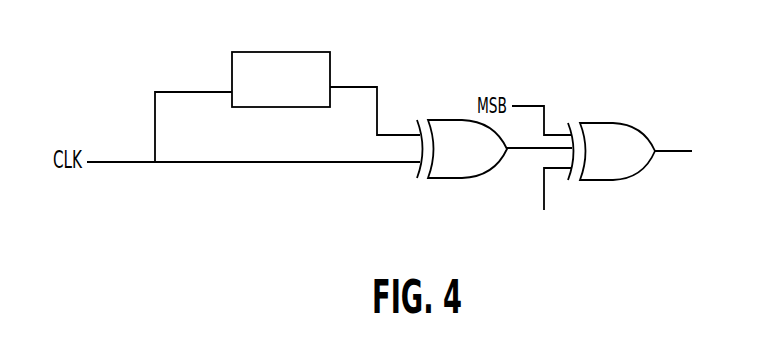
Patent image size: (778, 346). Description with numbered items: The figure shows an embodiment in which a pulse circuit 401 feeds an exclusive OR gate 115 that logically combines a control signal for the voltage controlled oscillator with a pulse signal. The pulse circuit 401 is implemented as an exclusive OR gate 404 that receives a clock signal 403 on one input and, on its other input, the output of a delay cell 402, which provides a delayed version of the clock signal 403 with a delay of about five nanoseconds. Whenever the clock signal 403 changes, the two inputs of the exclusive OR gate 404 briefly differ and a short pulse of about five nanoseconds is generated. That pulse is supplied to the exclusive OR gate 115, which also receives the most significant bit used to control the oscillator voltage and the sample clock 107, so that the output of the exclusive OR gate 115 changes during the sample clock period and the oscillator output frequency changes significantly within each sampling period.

The pulse circuit 401 is at (342, 182).
The delay cell 402 is at (295, 52).
The clock signal 403 is at (186, 163).
The XOR gate 404 is at (463, 120).
The sample clock 107 is at (544, 181).
The exclusive OR gate 115 is at (623, 123).